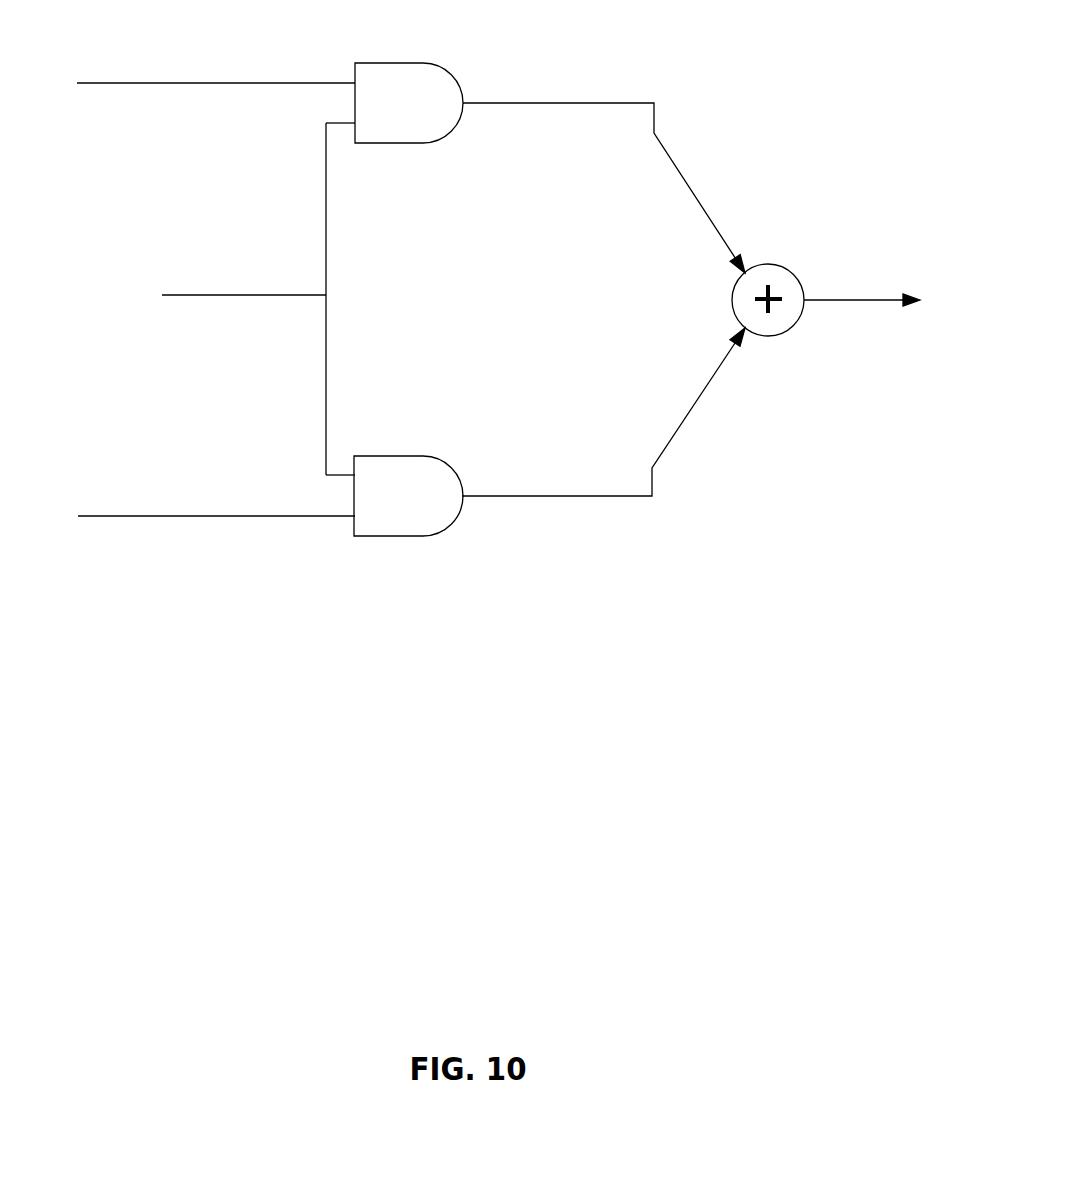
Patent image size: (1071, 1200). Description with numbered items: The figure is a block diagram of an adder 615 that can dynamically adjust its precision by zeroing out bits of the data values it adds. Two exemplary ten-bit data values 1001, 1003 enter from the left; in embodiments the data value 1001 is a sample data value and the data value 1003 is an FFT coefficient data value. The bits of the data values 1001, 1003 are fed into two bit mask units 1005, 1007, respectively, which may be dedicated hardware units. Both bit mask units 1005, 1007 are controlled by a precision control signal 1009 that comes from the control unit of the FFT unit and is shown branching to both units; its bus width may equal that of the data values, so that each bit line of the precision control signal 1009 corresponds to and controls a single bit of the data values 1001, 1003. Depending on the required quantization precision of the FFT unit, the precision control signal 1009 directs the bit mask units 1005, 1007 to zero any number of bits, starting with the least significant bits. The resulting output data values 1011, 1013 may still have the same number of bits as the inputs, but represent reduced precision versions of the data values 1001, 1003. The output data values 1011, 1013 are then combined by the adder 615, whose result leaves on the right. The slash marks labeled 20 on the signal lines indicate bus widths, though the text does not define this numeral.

The data value 1001 is at (93, 81).
The data value 1003 is at (93, 515).
The bit mask unit 1005 is at (398, 143).
The bit mask unit 1007 is at (398, 456).
The precision control signal 1009 is at (207, 295).
The output data value 1011 is at (490, 102).
The output data value 1013 is at (490, 495).
The adder 615 is at (782, 267).
The bus width 20 is at (223, 62).